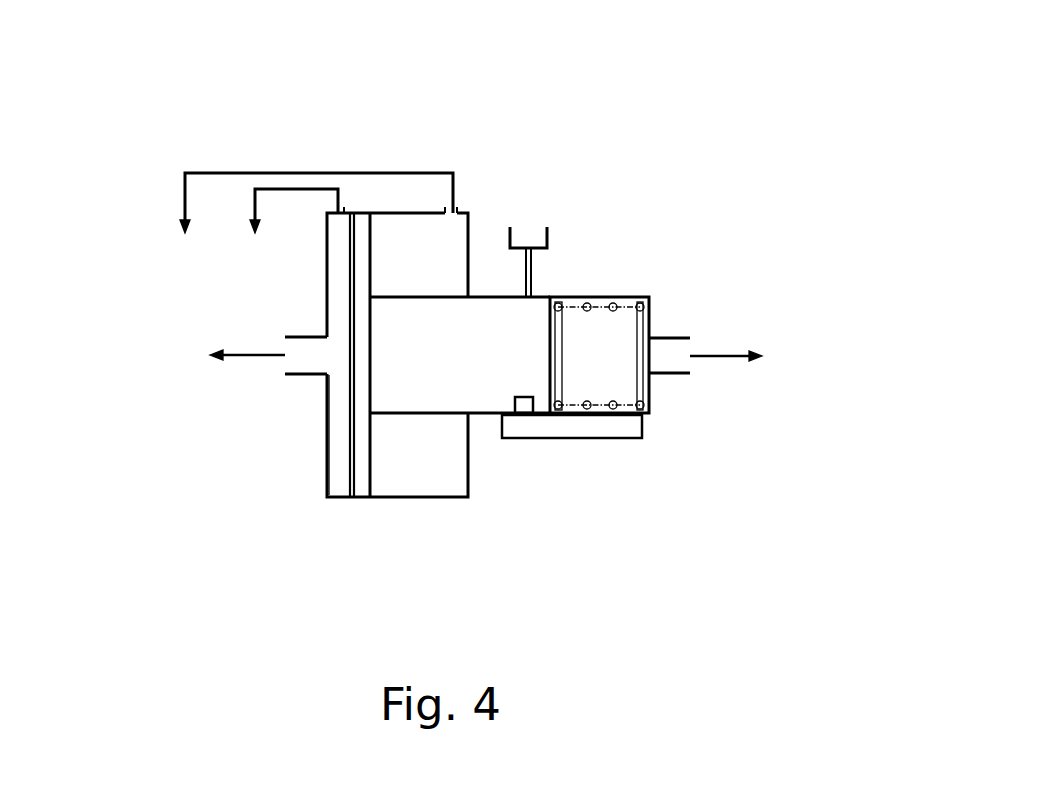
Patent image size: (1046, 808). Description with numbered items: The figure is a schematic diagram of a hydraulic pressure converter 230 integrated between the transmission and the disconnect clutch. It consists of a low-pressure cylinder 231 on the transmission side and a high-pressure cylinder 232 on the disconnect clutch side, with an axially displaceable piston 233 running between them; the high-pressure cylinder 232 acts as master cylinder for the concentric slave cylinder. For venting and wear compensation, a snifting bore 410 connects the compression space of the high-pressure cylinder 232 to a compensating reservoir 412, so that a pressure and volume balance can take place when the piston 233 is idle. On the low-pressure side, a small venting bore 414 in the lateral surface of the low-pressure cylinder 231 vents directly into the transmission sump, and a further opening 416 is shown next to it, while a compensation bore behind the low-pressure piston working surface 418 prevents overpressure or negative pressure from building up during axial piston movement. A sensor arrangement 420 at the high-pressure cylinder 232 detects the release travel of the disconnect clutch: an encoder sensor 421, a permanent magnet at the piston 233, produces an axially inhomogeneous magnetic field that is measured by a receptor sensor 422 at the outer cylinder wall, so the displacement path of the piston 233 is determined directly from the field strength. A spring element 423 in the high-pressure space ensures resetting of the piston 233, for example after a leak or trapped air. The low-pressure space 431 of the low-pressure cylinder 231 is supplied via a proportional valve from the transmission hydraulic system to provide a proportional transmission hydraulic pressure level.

The pressure converter 230 is at (600, 97).
The low-pressure cylinder 231 is at (425, 497).
The high-pressure cylinder 232 is at (648, 312).
The piston 233 is at (460, 355).
The snifting bore 410 is at (533, 293).
The compensating reservoir 412 is at (547, 232).
The venting bore 414 is at (342, 210).
The second outlet / vent 416 is at (460, 202).
The low-pressure piston working surface 418 is at (352, 418).
The sensor arrangement 420 is at (598, 462).
The encoder sensor 421 is at (523, 408).
The receptor sensor 422 is at (628, 440).
The spring element 423 is at (650, 411).
The low-pressure space 431 is at (343, 468).